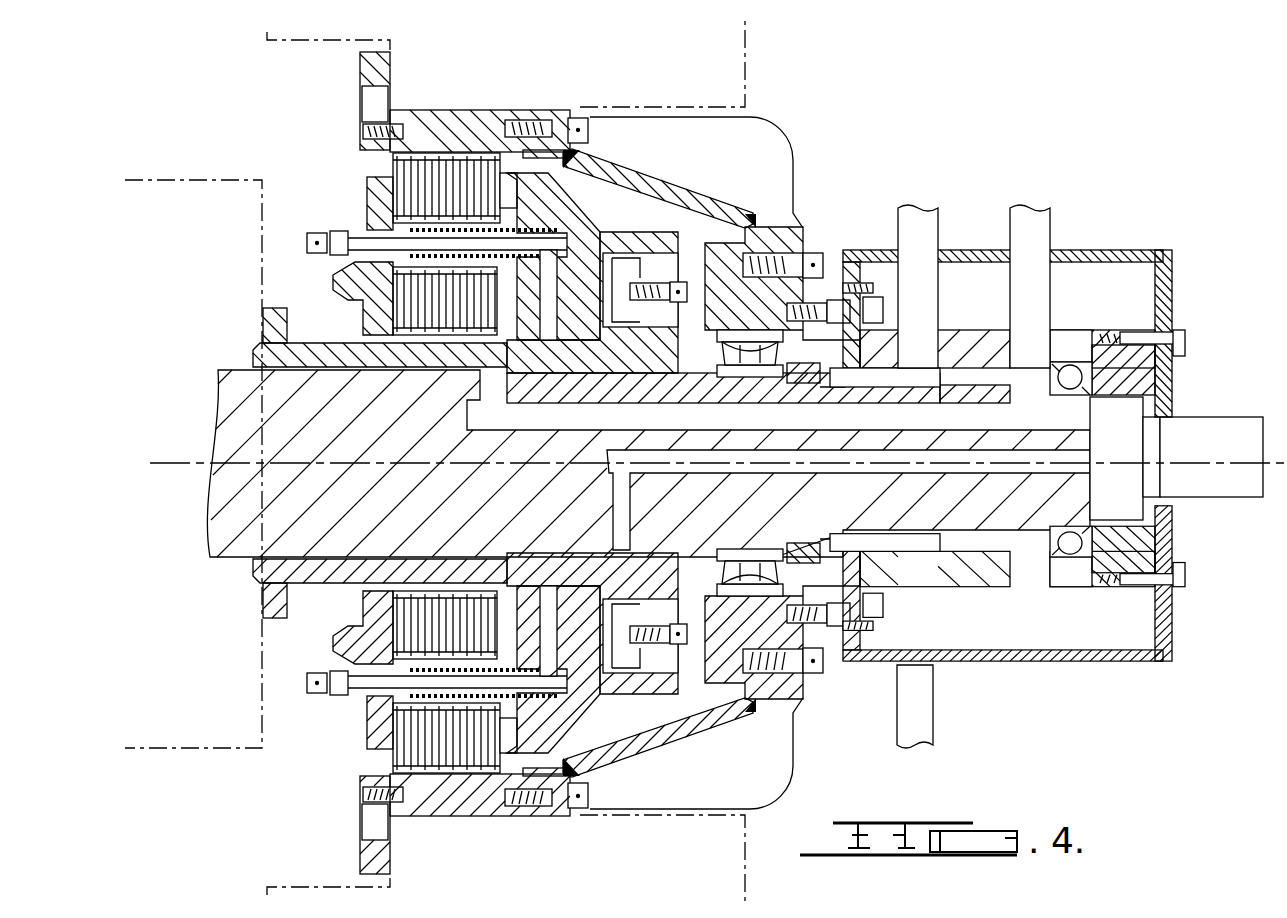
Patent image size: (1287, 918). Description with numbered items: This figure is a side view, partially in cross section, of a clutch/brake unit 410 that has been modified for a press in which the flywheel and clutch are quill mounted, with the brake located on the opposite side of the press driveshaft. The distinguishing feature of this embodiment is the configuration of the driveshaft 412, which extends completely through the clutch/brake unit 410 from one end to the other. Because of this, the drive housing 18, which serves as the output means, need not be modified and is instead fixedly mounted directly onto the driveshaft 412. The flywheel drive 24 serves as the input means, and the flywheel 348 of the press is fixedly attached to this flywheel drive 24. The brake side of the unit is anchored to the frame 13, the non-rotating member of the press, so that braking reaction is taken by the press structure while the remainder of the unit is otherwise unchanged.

The frame 13 is at (160, 182).
The drive housing 18 is at (578, 347).
The flywheel drive 24 is at (462, 132).
The flywheel 348 is at (745, 80).
The clutch/brake unit 410 is at (1026, 150).
The driveshaft 412 is at (225, 398).